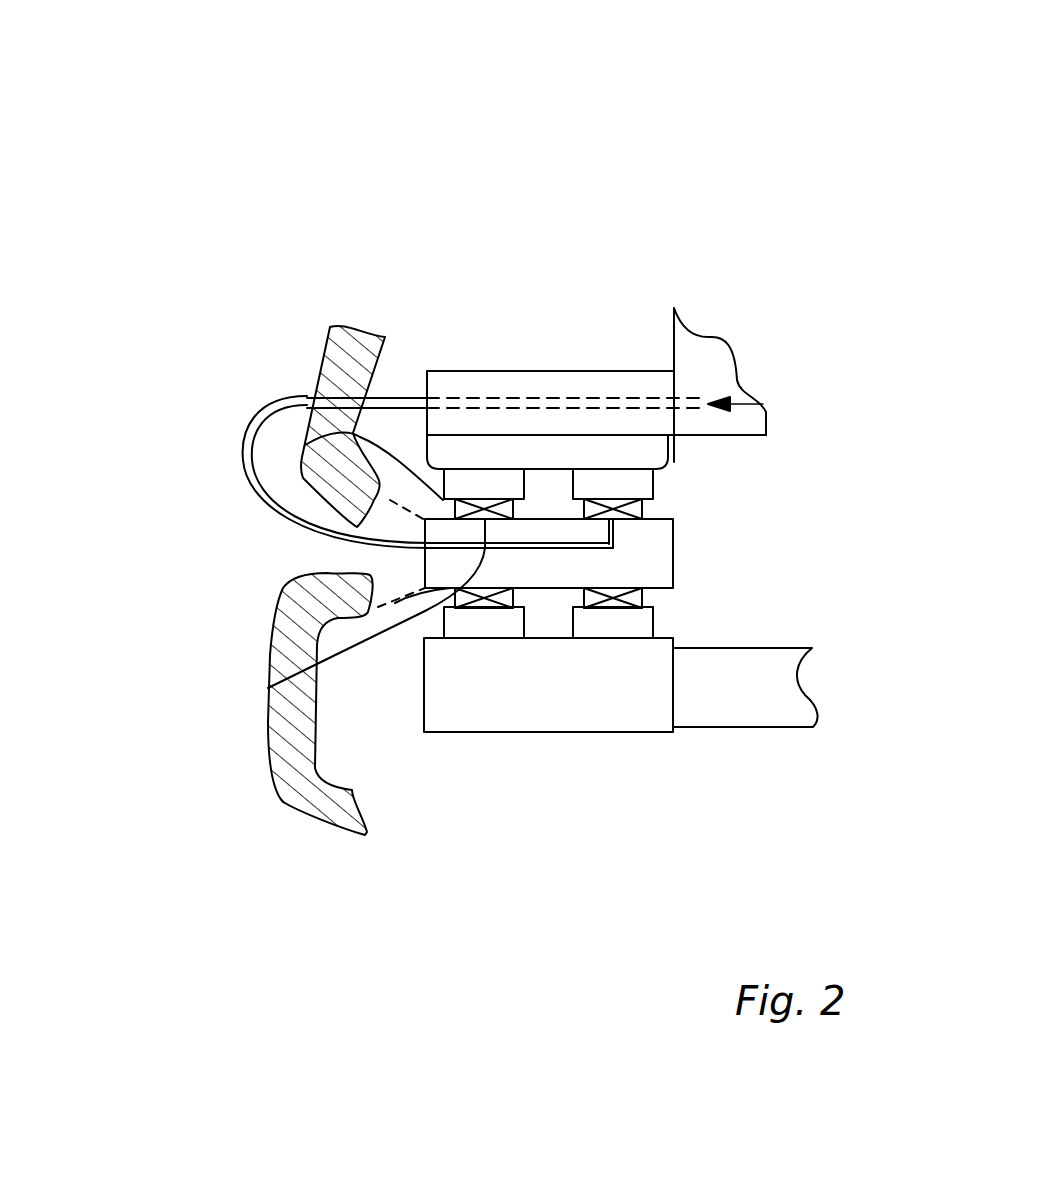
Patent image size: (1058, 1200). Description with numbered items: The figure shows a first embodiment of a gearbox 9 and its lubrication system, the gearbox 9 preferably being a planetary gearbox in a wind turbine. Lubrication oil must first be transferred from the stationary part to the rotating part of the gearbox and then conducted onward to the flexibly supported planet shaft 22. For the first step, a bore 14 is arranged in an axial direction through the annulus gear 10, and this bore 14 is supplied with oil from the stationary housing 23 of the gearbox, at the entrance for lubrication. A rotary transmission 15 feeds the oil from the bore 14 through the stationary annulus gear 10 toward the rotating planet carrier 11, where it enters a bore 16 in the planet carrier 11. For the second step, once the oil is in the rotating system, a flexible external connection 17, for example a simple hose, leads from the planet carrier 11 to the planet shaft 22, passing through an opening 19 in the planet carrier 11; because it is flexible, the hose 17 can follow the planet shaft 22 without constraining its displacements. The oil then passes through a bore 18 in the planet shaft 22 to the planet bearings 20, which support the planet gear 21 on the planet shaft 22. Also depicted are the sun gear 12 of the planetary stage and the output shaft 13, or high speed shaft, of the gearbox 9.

The gearbox 9 is at (633, 103).
The annulus gear 10 is at (622, 377).
The planet carrier 11 is at (337, 322).
The sun gear 12 is at (623, 715).
The output shaft 13 is at (728, 685).
The bore in the annulus gear 14 is at (487, 400).
The rotary transmission 15 is at (405, 396).
The bore in the planet carrier 16 is at (322, 398).
The flexible external connection 17 is at (250, 420).
The bore in the planet shaft 18 is at (315, 687).
The opening in the planet carrier 19 is at (330, 560).
The planet bearings 20 is at (340, 433).
The planet gear 21 is at (632, 483).
The planet shaft 22 is at (653, 566).
The stationary housing 23 is at (723, 362).